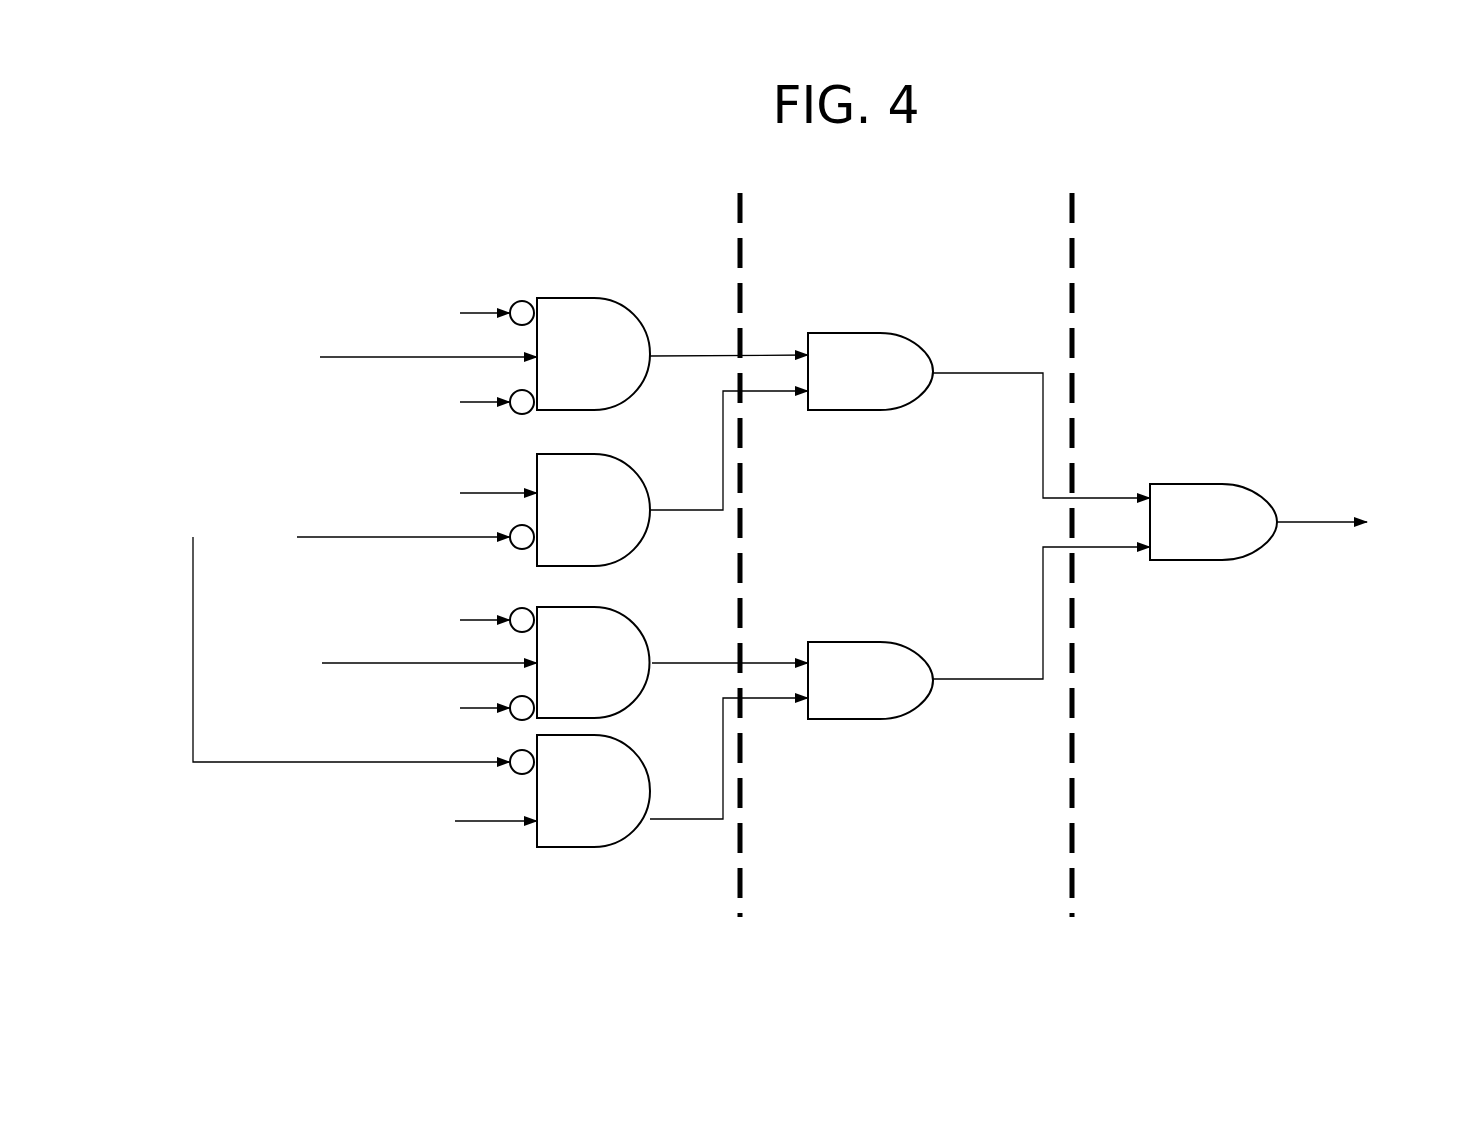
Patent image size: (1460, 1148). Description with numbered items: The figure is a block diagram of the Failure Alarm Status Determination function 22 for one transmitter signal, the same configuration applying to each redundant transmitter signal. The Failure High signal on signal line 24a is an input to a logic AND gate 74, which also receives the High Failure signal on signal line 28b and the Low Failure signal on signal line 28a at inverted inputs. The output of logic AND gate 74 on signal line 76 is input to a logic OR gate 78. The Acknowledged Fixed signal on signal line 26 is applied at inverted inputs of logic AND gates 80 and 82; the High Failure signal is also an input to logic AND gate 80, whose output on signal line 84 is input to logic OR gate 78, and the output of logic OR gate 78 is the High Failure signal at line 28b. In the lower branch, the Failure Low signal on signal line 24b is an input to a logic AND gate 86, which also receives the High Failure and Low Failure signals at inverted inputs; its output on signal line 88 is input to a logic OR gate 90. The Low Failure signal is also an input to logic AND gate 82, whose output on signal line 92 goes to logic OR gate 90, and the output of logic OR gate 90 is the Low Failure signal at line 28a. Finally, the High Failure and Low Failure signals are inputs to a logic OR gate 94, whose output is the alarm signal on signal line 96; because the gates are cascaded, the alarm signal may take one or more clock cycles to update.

The Failure Alarm Status Determination function 22 is at (1125, 268).
The logic AND gate 74 is at (622, 297).
The signal line 76 is at (773, 352).
The logic OR gate 78 is at (906, 412).
The logic AND gate 80 is at (626, 454).
The logic AND gate 82 is at (628, 735).
The signal line 84 is at (772, 393).
The logic AND gate 86 is at (626, 607).
The signal line 88 is at (774, 660).
The logic OR gate 90 is at (910, 641).
The signal line 92 is at (771, 700).
The logic OR gate 94 is at (1213, 562).
The signal line 96 is at (1312, 528).
The signal line 28b is at (488, 310).
The signal line 24a is at (488, 354).
The signal line 28a is at (488, 399).
The signal line 26 is at (488, 534).
The signal line 24b is at (488, 661).